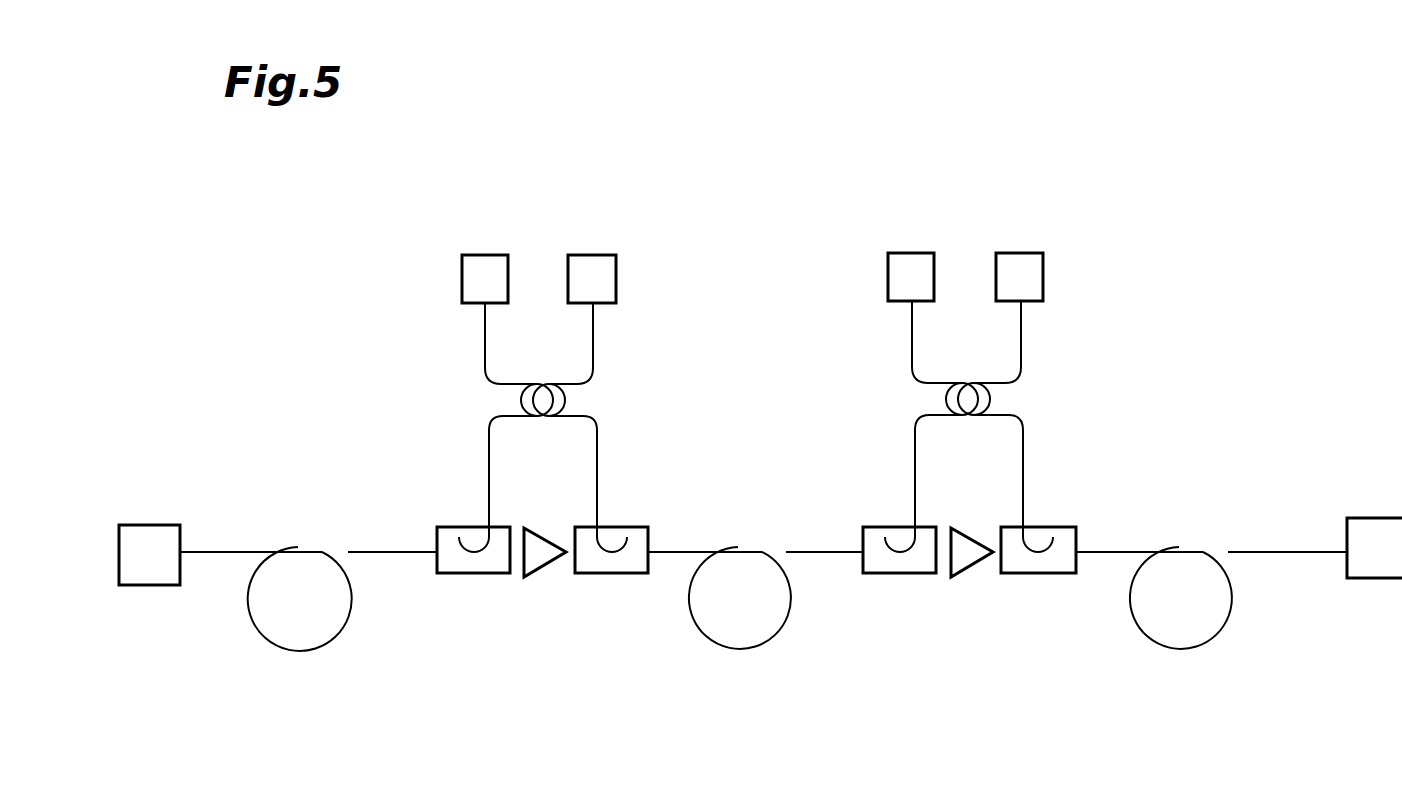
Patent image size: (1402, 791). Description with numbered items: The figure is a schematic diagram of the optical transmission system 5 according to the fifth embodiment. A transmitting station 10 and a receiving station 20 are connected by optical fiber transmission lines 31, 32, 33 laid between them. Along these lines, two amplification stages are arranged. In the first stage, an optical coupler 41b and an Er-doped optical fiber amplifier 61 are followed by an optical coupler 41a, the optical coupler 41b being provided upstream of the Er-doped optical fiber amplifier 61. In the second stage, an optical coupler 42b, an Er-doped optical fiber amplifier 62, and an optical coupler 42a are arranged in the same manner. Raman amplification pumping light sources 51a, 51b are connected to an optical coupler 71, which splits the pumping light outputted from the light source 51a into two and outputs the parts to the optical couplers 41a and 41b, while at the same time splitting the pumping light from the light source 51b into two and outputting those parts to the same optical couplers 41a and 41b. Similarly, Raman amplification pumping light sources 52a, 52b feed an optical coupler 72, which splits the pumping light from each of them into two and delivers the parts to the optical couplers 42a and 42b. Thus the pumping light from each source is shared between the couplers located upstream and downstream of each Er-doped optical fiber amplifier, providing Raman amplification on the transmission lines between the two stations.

The optical transmission system 5 is at (808, 161).
The transmitting station 10 is at (150, 525).
The receiving station 20 is at (1375, 518).
The optical fiber transmission line 31 is at (318, 449).
The optical fiber transmission line 32 is at (758, 447).
The optical fiber transmission line 33 is at (1201, 443).
The optical coupler 41a is at (607, 575).
The optical coupler 41b is at (471, 575).
The optical coupler 42a is at (1038, 575).
The optical coupler 42b is at (897, 575).
The Raman amplification pumping light source 51a is at (603, 255).
The Raman amplification pumping light source 51b is at (482, 255).
The Raman amplification pumping light source 52a is at (1030, 253).
The Raman amplification pumping light source 52b is at (908, 253).
The Er-doped optical fiber amplifier 61 is at (548, 527).
The Er-doped optical fiber amplifier 62 is at (975, 527).
The optical coupler 71 is at (565, 400).
The optical coupler 72 is at (990, 398).